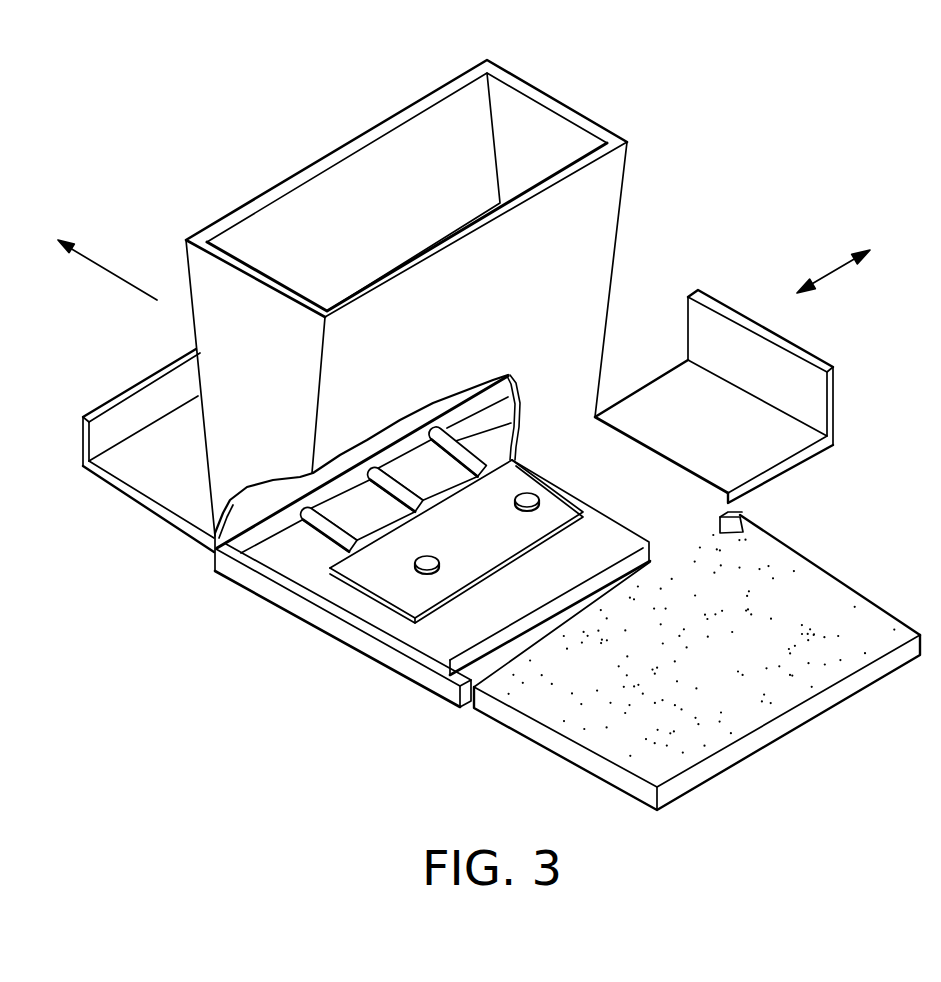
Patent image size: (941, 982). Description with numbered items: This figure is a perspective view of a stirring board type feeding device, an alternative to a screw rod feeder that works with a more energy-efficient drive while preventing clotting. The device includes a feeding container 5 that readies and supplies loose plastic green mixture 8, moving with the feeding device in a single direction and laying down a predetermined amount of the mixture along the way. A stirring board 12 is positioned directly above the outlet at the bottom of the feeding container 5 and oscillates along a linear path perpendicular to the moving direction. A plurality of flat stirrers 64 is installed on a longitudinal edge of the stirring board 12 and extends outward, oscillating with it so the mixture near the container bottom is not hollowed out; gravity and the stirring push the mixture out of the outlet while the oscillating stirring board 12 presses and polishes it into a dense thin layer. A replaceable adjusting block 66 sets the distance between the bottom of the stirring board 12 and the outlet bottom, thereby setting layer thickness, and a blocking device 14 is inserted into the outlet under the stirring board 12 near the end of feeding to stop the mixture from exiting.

The feeding container 5 is at (577, 112).
The loose plastic green mixture 8 is at (845, 605).
The stirring board 12 is at (657, 398).
The blocking device 14 is at (160, 477).
The flat stirrers 64 is at (332, 525).
The replaceable adjusting block 66 is at (407, 665).